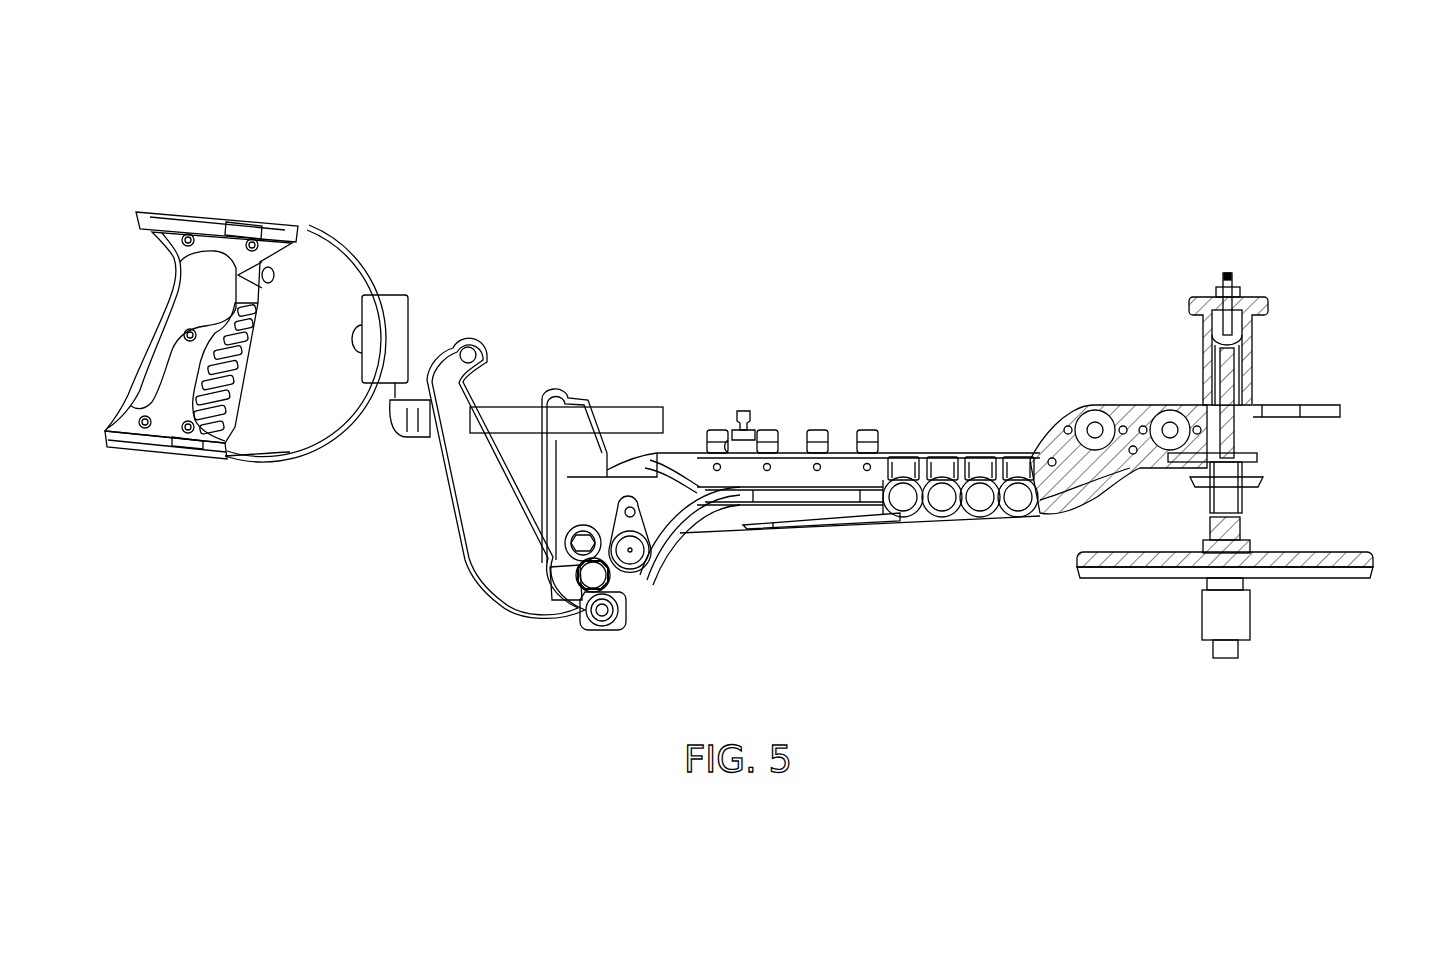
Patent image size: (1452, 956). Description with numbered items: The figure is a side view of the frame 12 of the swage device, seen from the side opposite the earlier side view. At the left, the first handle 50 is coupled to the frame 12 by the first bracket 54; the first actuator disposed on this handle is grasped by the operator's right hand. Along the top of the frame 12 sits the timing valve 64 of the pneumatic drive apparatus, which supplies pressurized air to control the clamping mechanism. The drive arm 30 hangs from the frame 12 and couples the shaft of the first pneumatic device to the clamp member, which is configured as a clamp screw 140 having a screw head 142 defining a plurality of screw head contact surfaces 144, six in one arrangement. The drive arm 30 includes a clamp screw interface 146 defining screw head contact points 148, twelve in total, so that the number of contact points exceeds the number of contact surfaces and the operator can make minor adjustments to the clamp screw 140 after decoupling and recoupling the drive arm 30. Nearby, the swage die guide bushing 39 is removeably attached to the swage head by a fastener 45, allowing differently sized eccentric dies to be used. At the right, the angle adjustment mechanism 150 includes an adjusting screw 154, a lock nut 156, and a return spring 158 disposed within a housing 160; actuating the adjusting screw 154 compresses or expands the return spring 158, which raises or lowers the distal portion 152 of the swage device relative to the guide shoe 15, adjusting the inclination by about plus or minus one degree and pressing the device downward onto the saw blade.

The frame 12 is at (878, 524).
The guide shoe 15 is at (1080, 563).
The drive arm 30 is at (508, 587).
The swage die guide bushing 39 is at (668, 540).
The fastener 45 is at (628, 510).
The first handle 50 is at (115, 420).
The first bracket 54 is at (235, 452).
The timing valve 64 is at (738, 408).
The clamp screw 140 is at (581, 538).
The screw head 142 is at (606, 592).
The screw head contact surfaces 144 is at (582, 590).
The clamp screw interface 146 is at (595, 600).
The screw head contact points 148 is at (578, 573).
The angle adjustment mechanism 150 is at (1190, 337).
The distal portion 152 is at (1223, 228).
The adjusting screw 154 is at (1235, 275).
The lock nut 156 is at (1245, 290).
The return spring 158 is at (1245, 375).
The housing 160 is at (1250, 510).